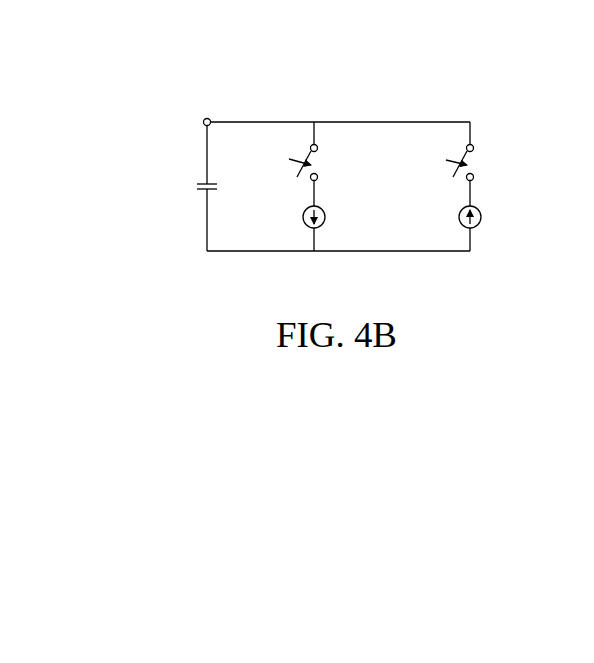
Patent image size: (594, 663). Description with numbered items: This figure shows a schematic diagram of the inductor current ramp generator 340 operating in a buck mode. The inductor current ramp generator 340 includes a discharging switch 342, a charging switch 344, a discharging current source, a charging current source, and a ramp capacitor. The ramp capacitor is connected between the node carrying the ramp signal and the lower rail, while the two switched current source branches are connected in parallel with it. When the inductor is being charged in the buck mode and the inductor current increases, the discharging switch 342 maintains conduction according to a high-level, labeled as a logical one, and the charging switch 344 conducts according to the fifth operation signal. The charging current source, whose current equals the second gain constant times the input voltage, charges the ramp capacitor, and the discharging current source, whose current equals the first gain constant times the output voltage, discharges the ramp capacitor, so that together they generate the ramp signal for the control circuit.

The inductor current ramp generator 340 is at (193, 48).
The discharging switch 342 is at (307, 163).
The charging switch 344 is at (465, 163).